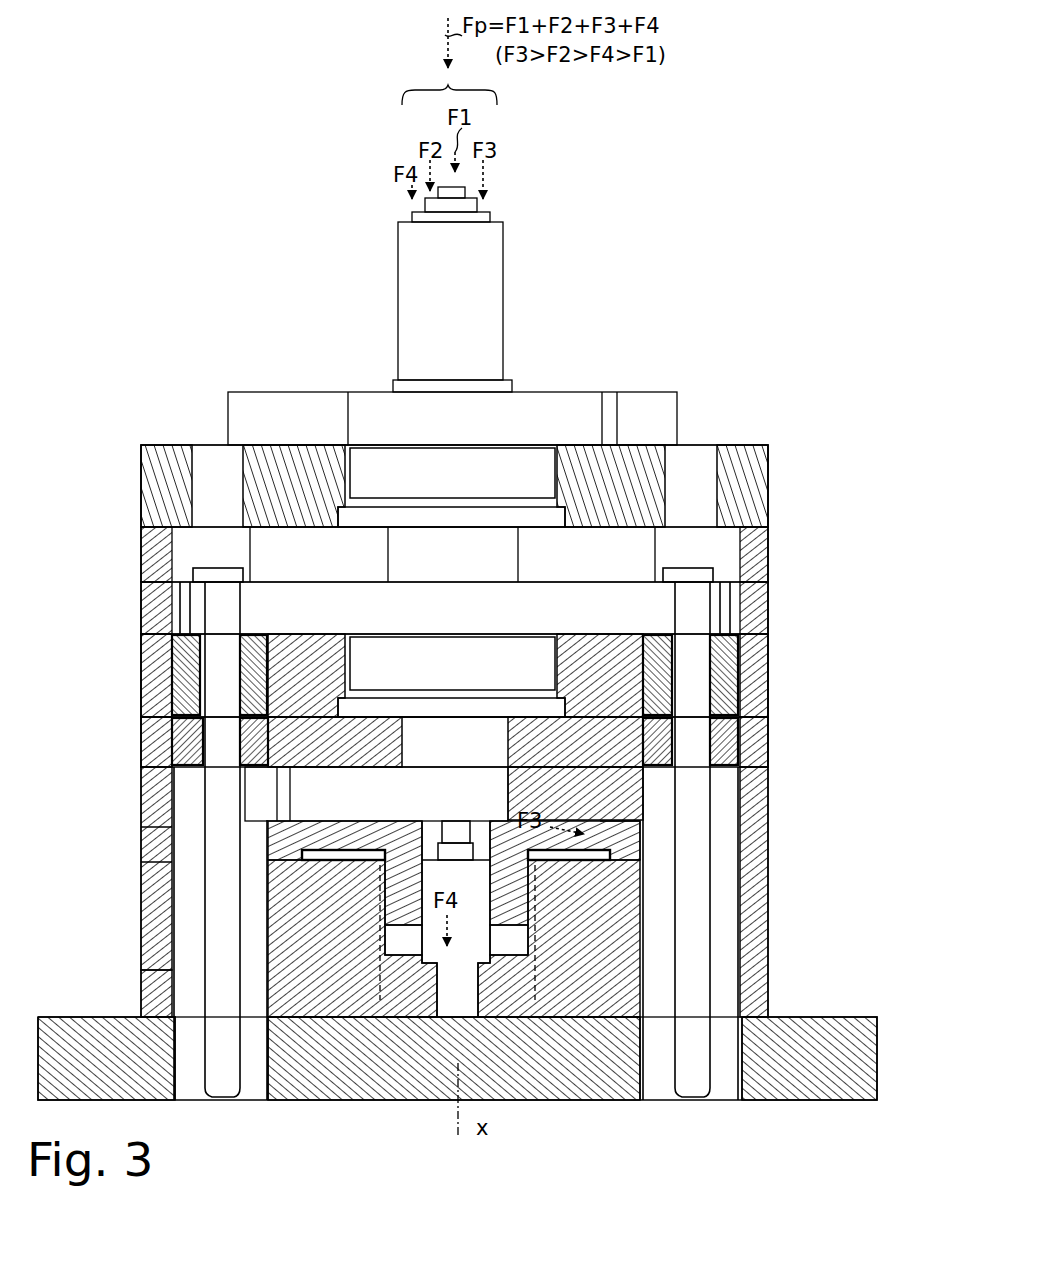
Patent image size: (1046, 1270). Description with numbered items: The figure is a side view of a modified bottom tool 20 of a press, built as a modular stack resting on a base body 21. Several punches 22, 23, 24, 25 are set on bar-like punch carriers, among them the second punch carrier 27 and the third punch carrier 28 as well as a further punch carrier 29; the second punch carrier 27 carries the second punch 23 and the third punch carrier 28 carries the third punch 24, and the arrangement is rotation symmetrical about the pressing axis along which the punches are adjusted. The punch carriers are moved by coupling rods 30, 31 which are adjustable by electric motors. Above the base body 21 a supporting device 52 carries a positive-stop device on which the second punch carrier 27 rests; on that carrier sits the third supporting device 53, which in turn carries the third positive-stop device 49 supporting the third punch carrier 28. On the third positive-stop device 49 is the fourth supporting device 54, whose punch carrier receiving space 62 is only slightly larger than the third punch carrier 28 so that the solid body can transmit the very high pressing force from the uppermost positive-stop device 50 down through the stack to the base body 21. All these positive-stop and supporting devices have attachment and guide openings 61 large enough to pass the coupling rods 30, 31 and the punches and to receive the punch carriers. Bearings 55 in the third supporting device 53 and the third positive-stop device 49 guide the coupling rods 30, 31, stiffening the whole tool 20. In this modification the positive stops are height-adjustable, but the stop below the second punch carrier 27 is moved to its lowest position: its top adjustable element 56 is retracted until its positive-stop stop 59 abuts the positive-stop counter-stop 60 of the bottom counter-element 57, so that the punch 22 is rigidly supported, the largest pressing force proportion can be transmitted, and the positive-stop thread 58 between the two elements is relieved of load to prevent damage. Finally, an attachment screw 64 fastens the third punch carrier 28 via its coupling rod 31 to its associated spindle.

The bottom tool 20 is at (356, 43).
The base body 21 is at (850, 1017).
The punch 22 is at (470, 186).
The second punch 23 is at (410, 194).
The third punch 24 is at (492, 209).
The punch 25 is at (488, 251).
The second punch carrier 27 is at (245, 821).
The third punch carrier 28 is at (732, 582).
The punch carrier 29 is at (660, 392).
The coupling rod 30 is at (740, 993).
The coupling rod 31 is at (150, 972).
The third positive-stop device 49 is at (766, 657).
The positive-stop device 50 is at (768, 466).
The supporting device 52 is at (740, 942).
The third supporting device 53 is at (766, 776).
The fourth supporting device 54 is at (768, 540).
The bearings 55 is at (172, 661).
The top adjustable element 56 is at (632, 824).
The counter-element 57 is at (600, 1020).
The positive-stop thread 58 is at (537, 990).
The positive-stop stop 59 is at (630, 862).
The positive-stop counter-stop 60 is at (610, 853).
The attachment and guide openings 61 is at (201, 432).
The punch carrier receiving space 62 is at (736, 622).
The attachment screw 64 is at (194, 553).